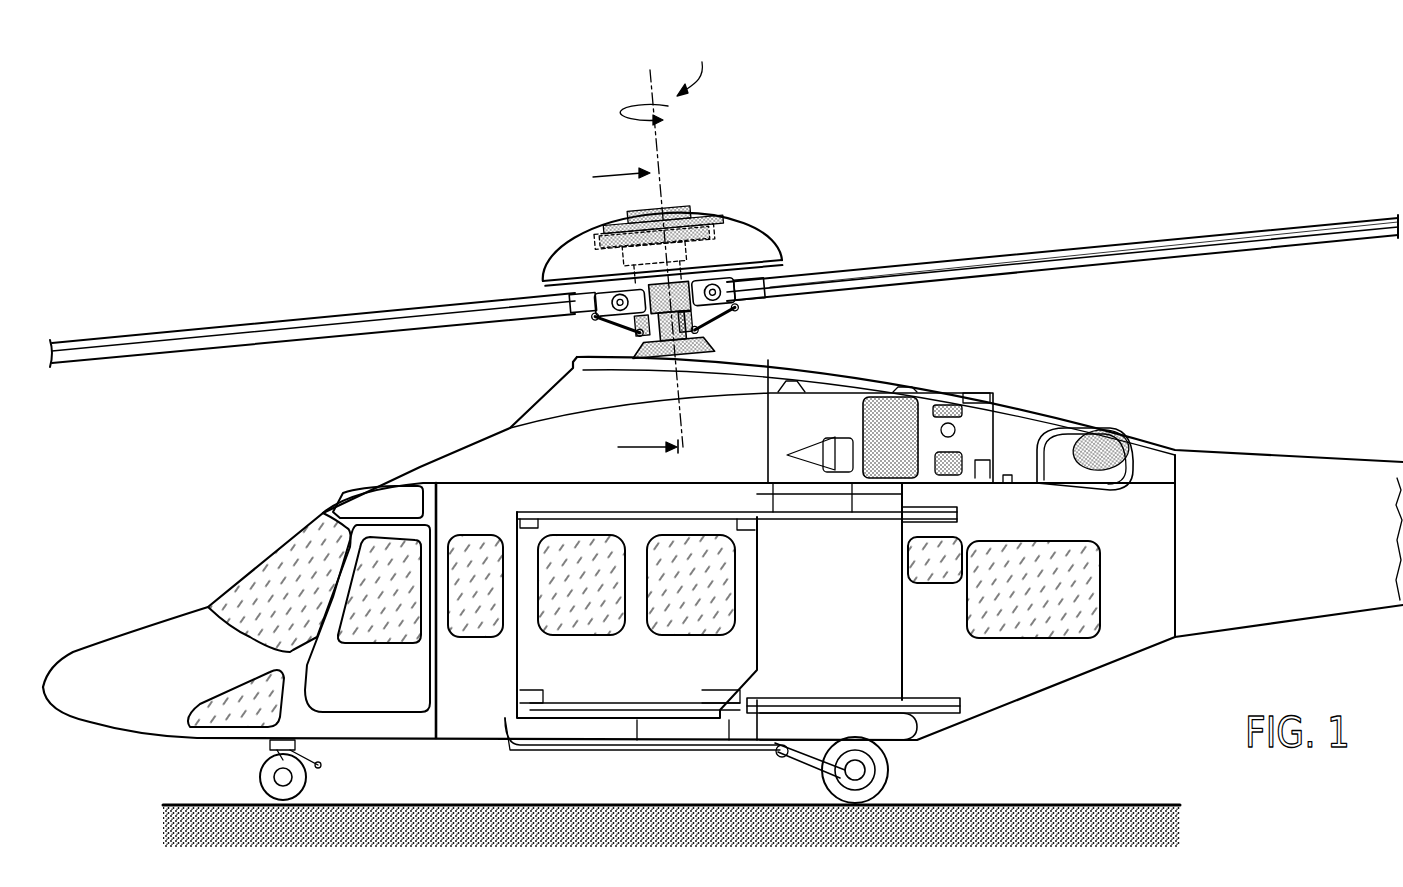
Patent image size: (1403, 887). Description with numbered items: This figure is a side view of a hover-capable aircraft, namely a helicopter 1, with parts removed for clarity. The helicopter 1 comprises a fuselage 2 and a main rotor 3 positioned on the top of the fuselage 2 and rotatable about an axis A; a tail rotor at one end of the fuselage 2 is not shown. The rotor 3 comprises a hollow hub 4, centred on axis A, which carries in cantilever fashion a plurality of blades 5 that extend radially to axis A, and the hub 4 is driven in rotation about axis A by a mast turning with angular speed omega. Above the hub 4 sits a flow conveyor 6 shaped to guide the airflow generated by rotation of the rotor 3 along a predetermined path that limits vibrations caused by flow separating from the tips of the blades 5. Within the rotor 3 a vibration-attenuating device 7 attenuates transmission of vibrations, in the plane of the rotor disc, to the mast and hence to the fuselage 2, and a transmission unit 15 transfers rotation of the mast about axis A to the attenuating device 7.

The helicopter 1 is at (723, 441).
The fuselage 2 is at (822, 382).
The main rotor 3 is at (724, 258).
The hub 4 is at (672, 297).
The blades 5 is at (237, 333).
The flow conveyor 6 is at (730, 230).
The vibration-attenuating device 7 is at (592, 241).
The transmission unit 15 is at (625, 265).